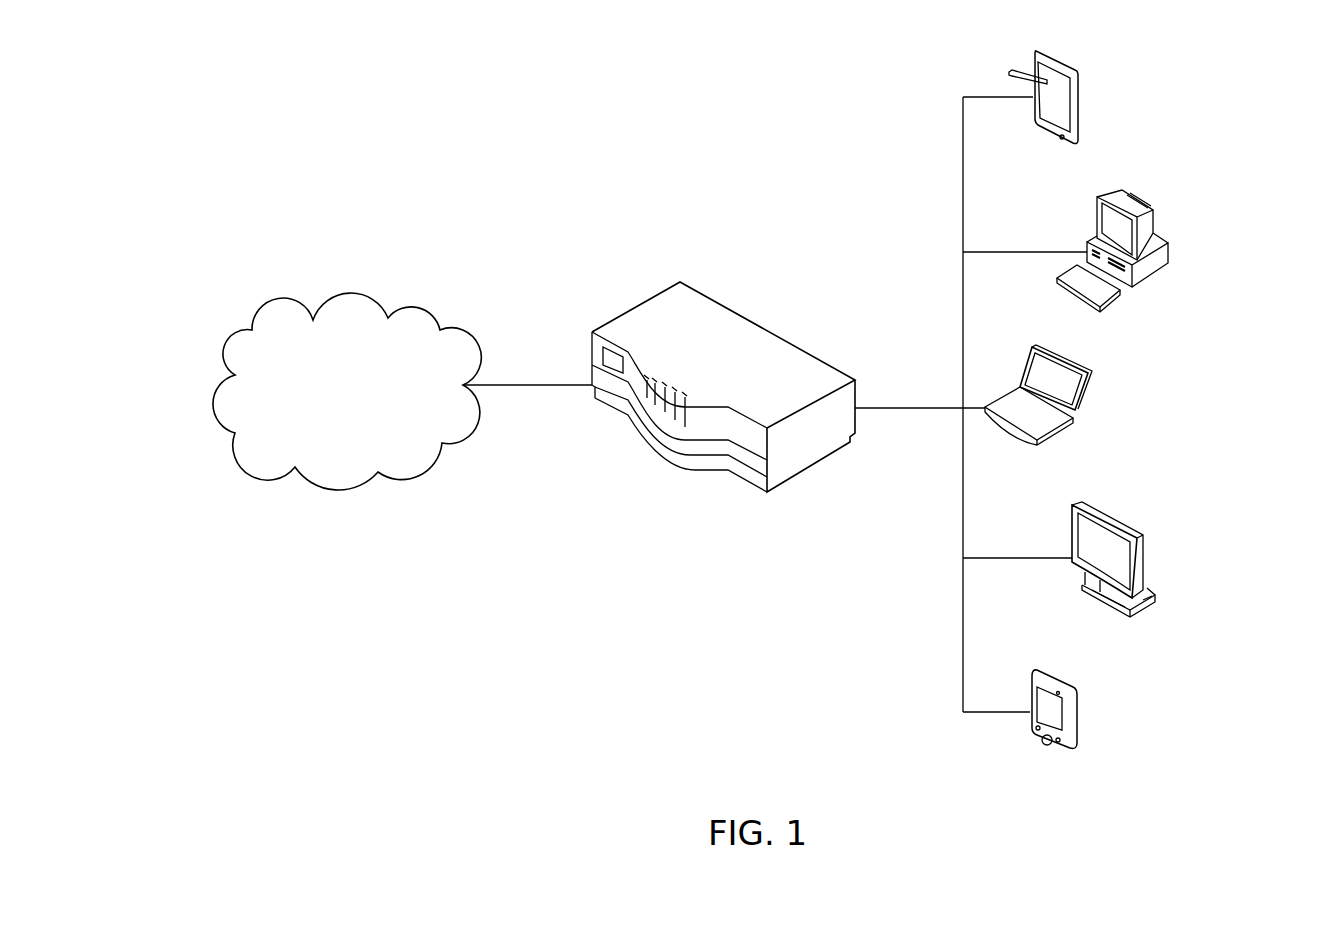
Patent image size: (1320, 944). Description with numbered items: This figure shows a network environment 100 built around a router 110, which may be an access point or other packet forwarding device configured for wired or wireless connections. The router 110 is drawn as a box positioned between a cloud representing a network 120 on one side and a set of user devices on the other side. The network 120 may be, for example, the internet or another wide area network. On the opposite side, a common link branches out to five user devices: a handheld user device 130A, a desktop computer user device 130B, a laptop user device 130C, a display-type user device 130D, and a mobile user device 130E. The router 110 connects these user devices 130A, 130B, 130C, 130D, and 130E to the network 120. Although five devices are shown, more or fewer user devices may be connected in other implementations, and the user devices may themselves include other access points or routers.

The system 100 is at (206, 72).
The router 110 is at (688, 470).
The network 120 is at (333, 490).
The user device 130A is at (1080, 102).
The user device 130B is at (1170, 253).
The user device 130C is at (1082, 410).
The user device 130D is at (1145, 553).
The user device 130E is at (1077, 718).